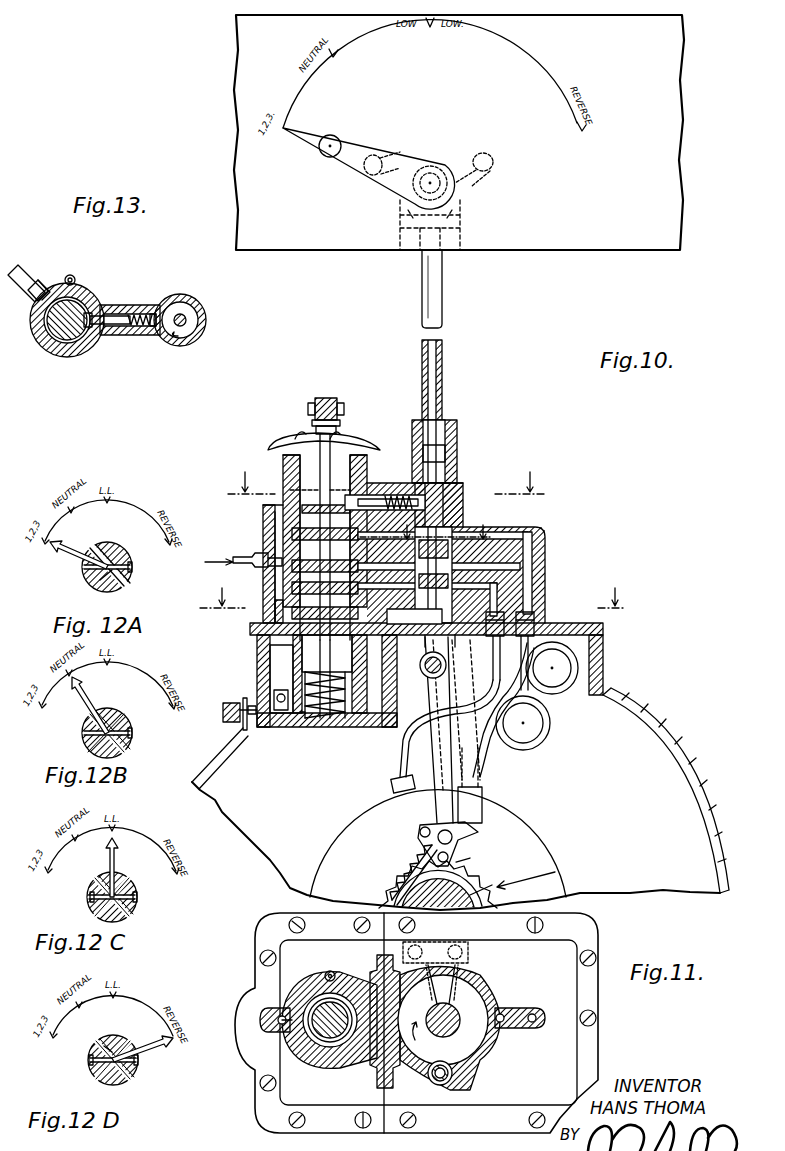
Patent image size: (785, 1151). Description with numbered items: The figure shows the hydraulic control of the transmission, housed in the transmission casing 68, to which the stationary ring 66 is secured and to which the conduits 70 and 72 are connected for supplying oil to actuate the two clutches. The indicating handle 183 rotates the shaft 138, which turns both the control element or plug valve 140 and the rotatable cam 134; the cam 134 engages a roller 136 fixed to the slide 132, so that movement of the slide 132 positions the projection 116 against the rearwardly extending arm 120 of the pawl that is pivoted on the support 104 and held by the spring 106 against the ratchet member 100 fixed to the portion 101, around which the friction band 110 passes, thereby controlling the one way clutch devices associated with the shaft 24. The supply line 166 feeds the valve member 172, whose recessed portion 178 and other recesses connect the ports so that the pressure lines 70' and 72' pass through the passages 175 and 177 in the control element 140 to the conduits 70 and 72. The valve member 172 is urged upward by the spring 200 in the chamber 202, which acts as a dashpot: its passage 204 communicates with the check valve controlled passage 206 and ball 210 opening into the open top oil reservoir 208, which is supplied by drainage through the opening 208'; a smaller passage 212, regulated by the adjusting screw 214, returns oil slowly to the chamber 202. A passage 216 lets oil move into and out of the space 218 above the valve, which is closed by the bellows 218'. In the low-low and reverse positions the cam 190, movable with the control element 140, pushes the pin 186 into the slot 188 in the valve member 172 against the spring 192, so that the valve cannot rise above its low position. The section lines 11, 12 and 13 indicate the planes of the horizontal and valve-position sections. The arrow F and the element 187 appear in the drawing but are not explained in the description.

In FIG. 10, the indicating handle 183 is at (363, 150).
In FIG. 12A, the indicating handle 183 is at (65, 553).
In FIG. 12B, the indicating handle 183 is at (86, 700).
In FIG. 12C, the indicating handle 183 is at (112, 867).
In FIG. 12D, the indicating handle 183 is at (170, 1050).
In FIG. 10, the rotatable shaft 138 is at (442, 308).
In FIG. 10, the cam 190 is at (450, 492).
In FIG. 13, the cam 190 is at (190, 325).
In FIG. 10, the passage 216 is at (292, 482).
In FIG. 11, the passage 216 is at (331, 972).
In FIG. 13, the passage 216 is at (71, 273).
In FIG. 10, the bellows 218' is at (321, 420).
In FIG. 10, the space above the valve 218 is at (324, 505).
In FIG. 10, the slot 188 is at (340, 470).
In FIG. 13, the slot 188 is at (105, 305).
In FIG. 10, the pin 186 is at (378, 475).
In FIG. 13, the pin 186 is at (116, 326).
In FIG. 12A, the pin 186 is at (101, 585).
In FIG. 12C, the pin 186 is at (88, 897).
In FIG. 12D, the pin 186 is at (108, 1044).
In FIG. 10, the spring 192 is at (394, 495).
In FIG. 13, the spring 192 is at (145, 326).
In FIG. 10, the pressure line 70' is at (464, 573).
In FIG. 11, the pressure line 70' is at (543, 1031).
In FIG. 12A, the pressure line 70' is at (148, 566).
In FIG. 12B, the pressure line 70' is at (148, 739).
In FIG. 12C, the pressure line 70' is at (152, 903).
In FIG. 12D, the pressure line 70' is at (154, 1062).
In FIG. 10, the control element 140 is at (470, 566).
In FIG. 11, the control element 140 is at (450, 1012).
In FIG. 12A, the control element 140 is at (122, 584).
In FIG. 12B, the control element 140 is at (130, 722).
In FIG. 12C, the control element 140 is at (135, 893).
In FIG. 12D, the control element 140 is at (113, 1060).
In FIG. 10, the pressure line 72' is at (466, 598).
In FIG. 11, the pressure line 72' is at (520, 1029).
In FIG. 10, the passage 177 is at (534, 606).
In FIG. 10, the passage 175 is at (434, 575).
In FIG. 12A, the passage 175 is at (85, 578).
In FIG. 12B, the passage 175 is at (88, 730).
In FIG. 12C, the passage 175 is at (98, 880).
In FIG. 12D, the passage 175 is at (128, 1048).
In FIG. 10, the section line 12— 12 is at (426, 525).
In FIG. 10, the section line 13— 13 is at (386, 475).
In FIG. 10, the section line 11— 11 is at (412, 589).
In FIG. 10, the supply line 166 is at (245, 555).
In FIG. 11, the supply line 166 is at (272, 1020).
In FIG. 13, the supply line 166 is at (32, 272).
In FIG. 10, the opening 208' is at (241, 611).
In FIG. 10, the rotatable cam 134 is at (414, 616).
In FIG. 11, the rotatable cam 134 is at (449, 1029).
In FIG. 10, the oil reservoir 208 is at (246, 678).
In FIG. 10, the check valve controlled passage 206 is at (283, 690).
In FIG. 10, the valve member 172 is at (327, 653).
In FIG. 11, the valve member 172 is at (330, 1030).
In FIG. 13, the valve member 172 is at (48, 352).
In FIG. 10, the second smaller passage 212 is at (274, 697).
In FIG. 10, the spring 200 is at (340, 718).
In FIG. 10, the adjusting screw 214 is at (245, 730).
In FIG. 10, the ball 210 is at (262, 727).
In FIG. 10, the passage 204 is at (300, 727).
In FIG. 10, the chamber 202 is at (325, 727).
In FIG. 10, the conduit 70 is at (542, 696).
In FIG. 12D, the conduit 70 is at (68, 1056).
In FIG. 10, the conduit 72 is at (467, 718).
In FIG. 10, the slide 132 is at (447, 668).
In FIG. 10, the roller 136 is at (452, 640).
In FIG. 11, the roller 136 is at (452, 1082).
In FIG. 10, the support 104 is at (436, 808).
In FIG. 10, the projection 116 is at (482, 825).
In FIG. 10, the rearwardly extending arm 120 is at (478, 838).
In FIG. 10, the spring 106 is at (412, 848).
In FIG. 10, the stationary ring 66 is at (552, 860).
In FIG. 10, the ratchet member 100 is at (480, 876).
In FIG. 10, the shaft 24 is at (395, 900).
In FIG. 10, the portion of the housing 101 is at (470, 860).
In FIG. 10, the band 110 is at (497, 893).
In FIG. 10, the direction of rotation F is at (555, 874).
In FIG. 10, the transmission casing 68 is at (728, 815).
In FIG. 12A, the recessed portion 178 is at (86, 550).
In FIG. 12B, the valve slot 187 is at (112, 710).
In FIG. 12C, the valve slot 187 is at (126, 882).
In FIG. 12D, the valve slot 187 is at (124, 1075).